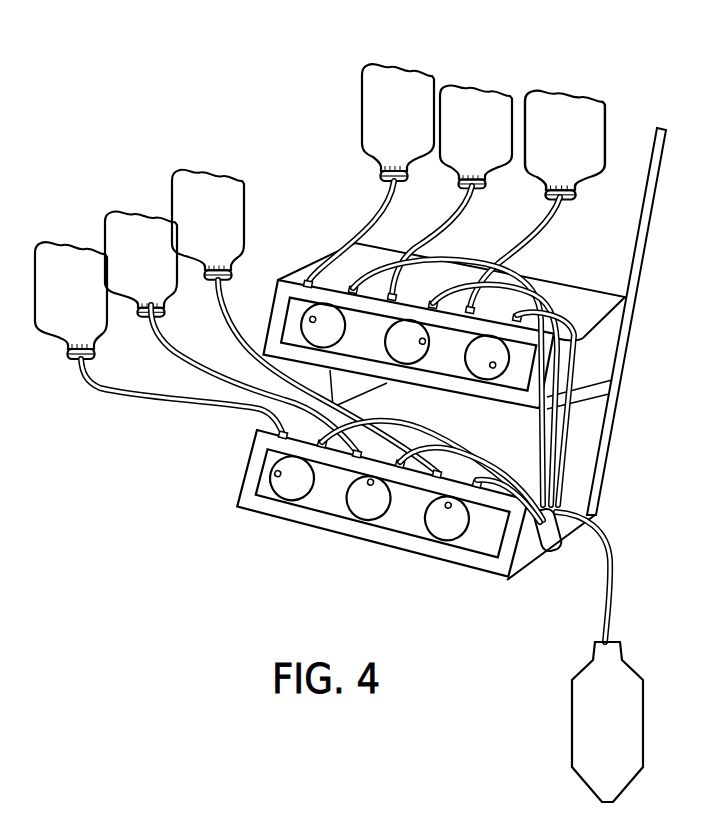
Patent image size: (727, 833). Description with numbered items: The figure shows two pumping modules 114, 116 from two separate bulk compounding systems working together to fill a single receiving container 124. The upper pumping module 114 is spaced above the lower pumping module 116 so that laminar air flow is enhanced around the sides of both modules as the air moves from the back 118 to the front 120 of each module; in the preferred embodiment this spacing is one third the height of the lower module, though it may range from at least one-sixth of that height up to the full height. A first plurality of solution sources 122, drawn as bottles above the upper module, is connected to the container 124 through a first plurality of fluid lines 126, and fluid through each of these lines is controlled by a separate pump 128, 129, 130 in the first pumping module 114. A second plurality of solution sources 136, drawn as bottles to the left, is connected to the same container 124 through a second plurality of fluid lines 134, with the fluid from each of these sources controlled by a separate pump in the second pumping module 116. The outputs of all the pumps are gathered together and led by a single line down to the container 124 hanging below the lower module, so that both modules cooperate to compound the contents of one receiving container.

The pumping module 114 is at (597, 360).
The pumping module 116 is at (580, 495).
The back 118 is at (610, 452).
The front 120 is at (440, 552).
The first plurality of solution sources 122 is at (477, 83).
The container 124 is at (622, 748).
The first plurality of fluid lines 126 is at (362, 222).
The pump 128 is at (416, 377).
The pump 129 is at (391, 339).
The pump 130 is at (473, 354).
The second plurality of fluid lines 134 is at (86, 378).
The bottles 136 is at (193, 197).